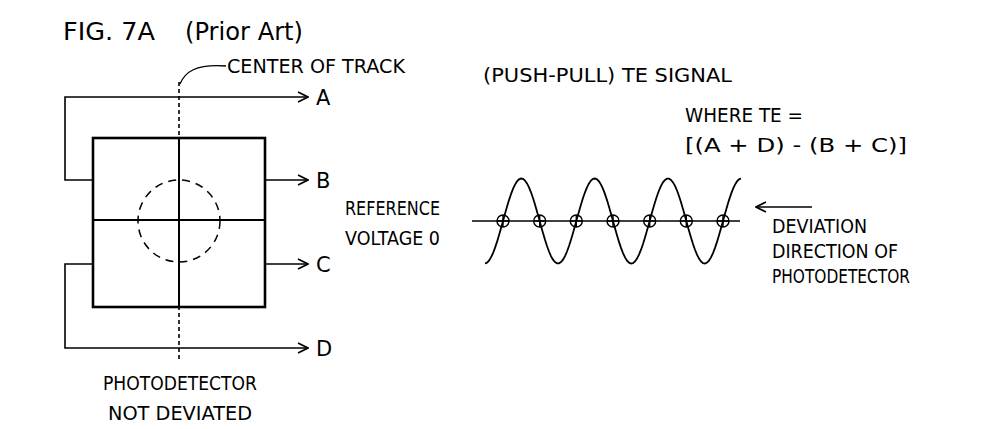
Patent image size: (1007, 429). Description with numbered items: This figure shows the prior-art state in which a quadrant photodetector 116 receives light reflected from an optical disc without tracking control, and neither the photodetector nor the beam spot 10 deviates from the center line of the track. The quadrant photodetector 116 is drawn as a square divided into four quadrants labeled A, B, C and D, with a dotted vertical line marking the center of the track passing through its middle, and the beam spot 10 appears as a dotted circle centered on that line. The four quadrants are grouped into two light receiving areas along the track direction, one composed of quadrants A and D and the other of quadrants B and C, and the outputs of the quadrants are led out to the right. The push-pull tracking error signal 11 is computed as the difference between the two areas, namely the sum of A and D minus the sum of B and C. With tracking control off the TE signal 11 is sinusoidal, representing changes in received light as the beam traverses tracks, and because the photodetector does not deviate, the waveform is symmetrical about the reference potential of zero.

The quadrant photodetector 116 is at (237, 137).
The beam spot 10 is at (220, 210).
The tracking error signal 11 is at (522, 178).